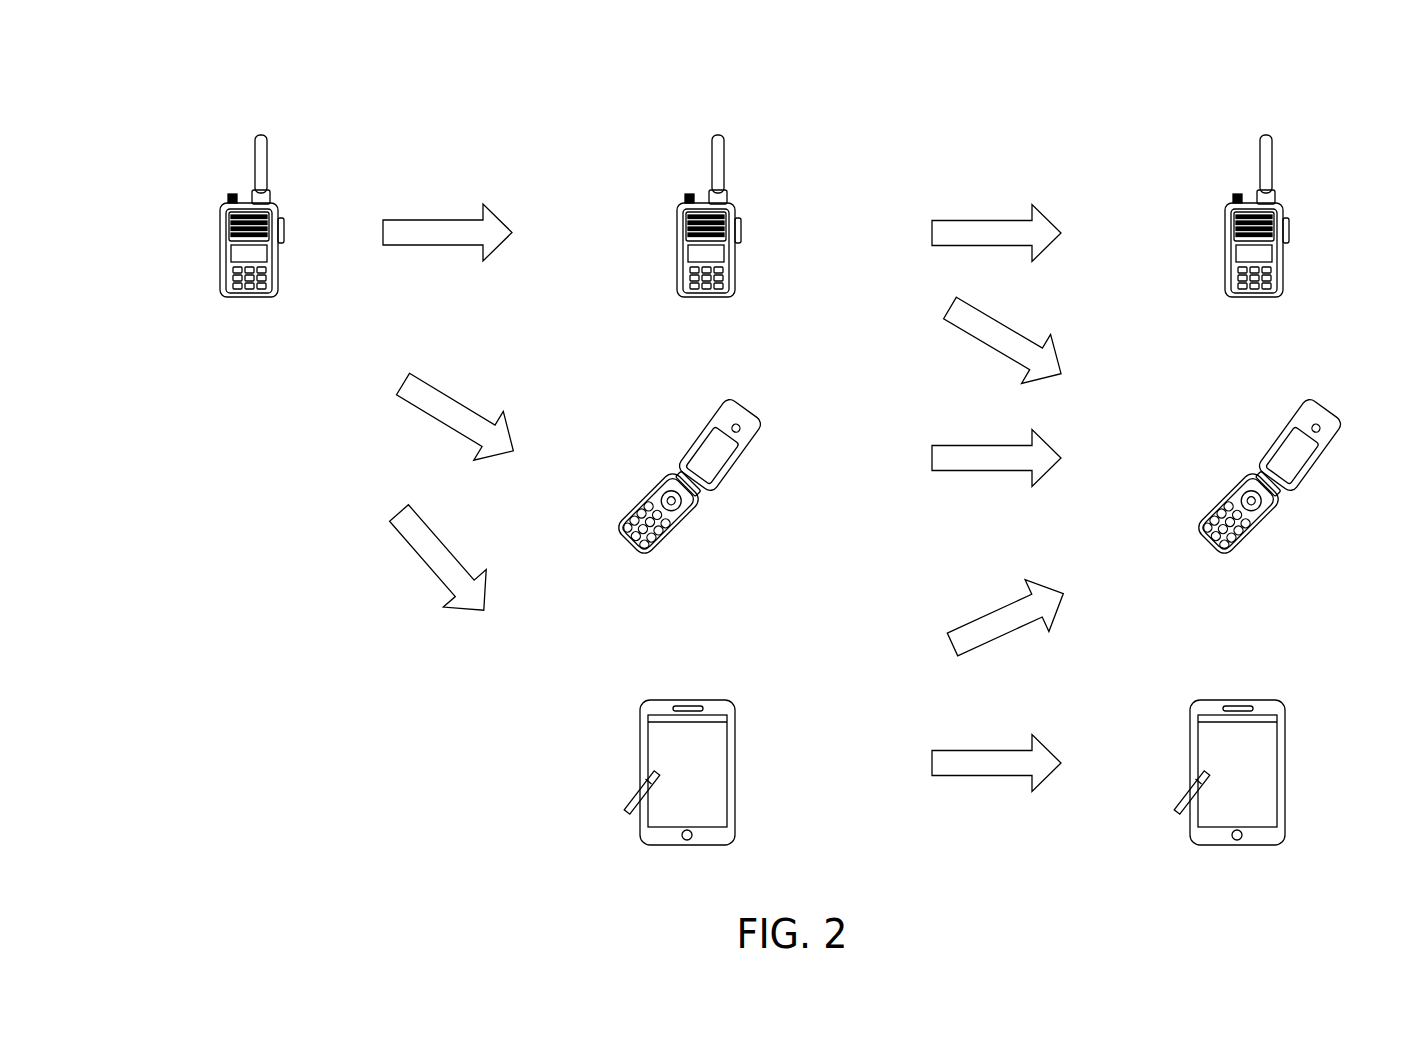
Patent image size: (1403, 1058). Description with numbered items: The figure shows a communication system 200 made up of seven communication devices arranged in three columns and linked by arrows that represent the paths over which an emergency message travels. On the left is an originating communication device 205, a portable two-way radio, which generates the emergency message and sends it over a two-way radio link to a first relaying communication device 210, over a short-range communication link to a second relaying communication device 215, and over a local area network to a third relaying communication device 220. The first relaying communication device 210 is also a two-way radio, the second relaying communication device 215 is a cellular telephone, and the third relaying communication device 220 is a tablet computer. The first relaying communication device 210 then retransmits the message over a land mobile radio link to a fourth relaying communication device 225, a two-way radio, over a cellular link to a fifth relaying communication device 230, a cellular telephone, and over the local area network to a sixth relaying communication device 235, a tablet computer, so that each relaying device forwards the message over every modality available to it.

The communication system 200 is at (230, 711).
The originating communication device 205 is at (222, 252).
The first relaying communication device 210 is at (680, 252).
The second relaying communication device 215 is at (621, 523).
The third relaying communication device 220 is at (640, 752).
The fourth relaying communication device 225 is at (1226, 252).
The fifth relaying communication device 230 is at (1200, 523).
The sixth relaying communication device 235 is at (1190, 752).